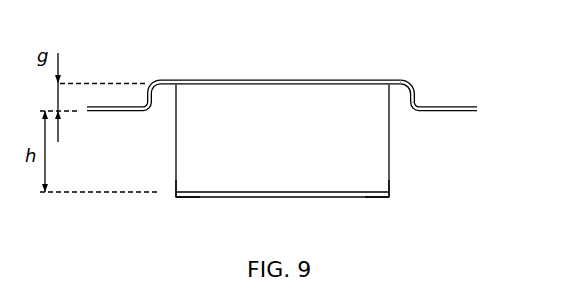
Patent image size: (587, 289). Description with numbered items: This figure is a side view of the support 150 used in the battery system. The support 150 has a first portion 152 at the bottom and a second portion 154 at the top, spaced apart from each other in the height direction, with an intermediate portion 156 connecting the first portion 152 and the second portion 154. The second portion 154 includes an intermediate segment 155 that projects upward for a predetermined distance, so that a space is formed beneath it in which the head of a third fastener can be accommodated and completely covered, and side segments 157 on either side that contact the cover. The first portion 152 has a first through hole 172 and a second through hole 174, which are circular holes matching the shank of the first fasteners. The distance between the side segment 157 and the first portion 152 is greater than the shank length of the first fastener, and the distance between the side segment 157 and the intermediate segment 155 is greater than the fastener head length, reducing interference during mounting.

The support 150 is at (478, 31).
The first portion 152 is at (293, 198).
The second portion 154 is at (384, 78).
The intermediate segment 155 is at (284, 79).
The intermediate portion 156 is at (176, 138).
The side segment 157 is at (97, 105).
The first through hole 172 is at (199, 198).
The second through hole 174 is at (365, 198).